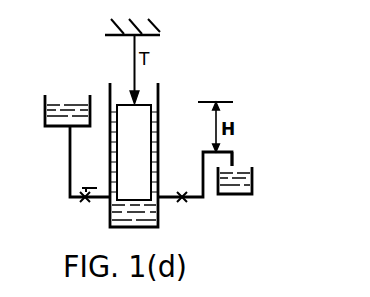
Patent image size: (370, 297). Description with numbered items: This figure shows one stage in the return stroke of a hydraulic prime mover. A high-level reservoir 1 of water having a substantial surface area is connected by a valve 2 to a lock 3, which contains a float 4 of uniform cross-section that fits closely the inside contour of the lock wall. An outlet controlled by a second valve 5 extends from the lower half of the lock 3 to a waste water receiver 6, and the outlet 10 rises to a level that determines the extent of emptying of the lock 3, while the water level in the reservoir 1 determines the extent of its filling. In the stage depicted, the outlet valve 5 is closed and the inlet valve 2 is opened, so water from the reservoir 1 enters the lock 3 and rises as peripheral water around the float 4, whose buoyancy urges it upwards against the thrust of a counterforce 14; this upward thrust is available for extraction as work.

The high-level reservoir 1 is at (45, 101).
The valve 2 is at (83, 204).
The lock 3 is at (128, 228).
The float 4 is at (143, 101).
The second valve 5 is at (184, 203).
The waste water receiver 6 is at (252, 168).
The outlet tube 10 is at (233, 157).
The counterforce 14 is at (115, 36).